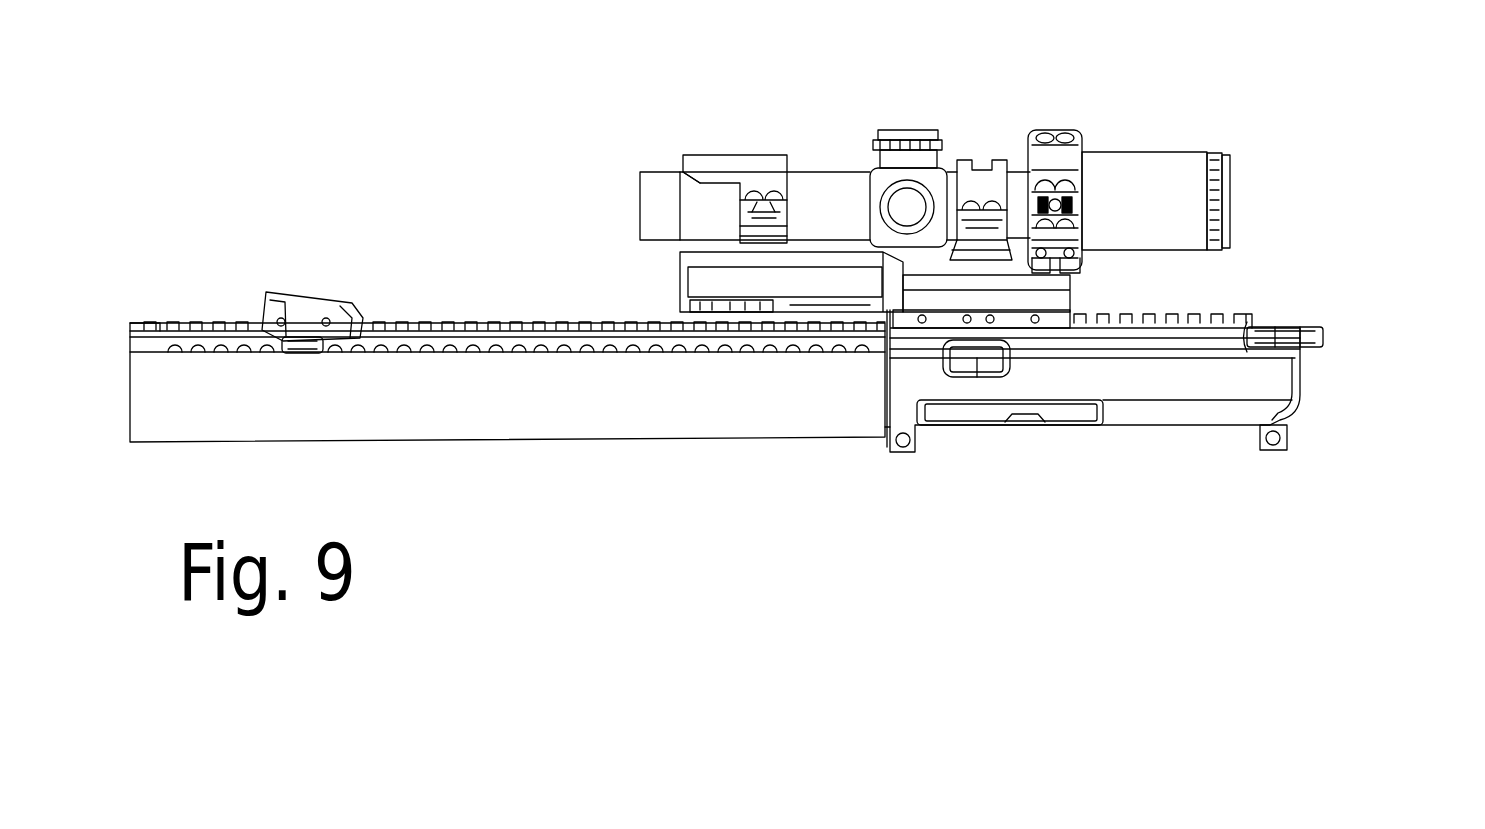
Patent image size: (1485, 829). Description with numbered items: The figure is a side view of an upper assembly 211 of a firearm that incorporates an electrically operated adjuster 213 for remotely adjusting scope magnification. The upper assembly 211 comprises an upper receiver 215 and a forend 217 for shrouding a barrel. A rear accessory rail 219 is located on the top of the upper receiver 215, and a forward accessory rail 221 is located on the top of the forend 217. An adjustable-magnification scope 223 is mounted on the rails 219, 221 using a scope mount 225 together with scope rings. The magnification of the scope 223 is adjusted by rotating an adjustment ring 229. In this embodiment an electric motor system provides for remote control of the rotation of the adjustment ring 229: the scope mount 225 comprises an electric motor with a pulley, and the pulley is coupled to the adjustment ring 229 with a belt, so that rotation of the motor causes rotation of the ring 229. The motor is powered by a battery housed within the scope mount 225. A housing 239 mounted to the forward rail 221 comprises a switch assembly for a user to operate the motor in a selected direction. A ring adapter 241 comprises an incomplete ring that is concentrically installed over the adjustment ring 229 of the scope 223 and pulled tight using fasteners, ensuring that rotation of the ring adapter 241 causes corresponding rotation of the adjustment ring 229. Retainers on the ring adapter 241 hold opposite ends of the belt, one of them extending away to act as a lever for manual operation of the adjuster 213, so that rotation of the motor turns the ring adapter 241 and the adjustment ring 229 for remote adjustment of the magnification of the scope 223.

The upper assembly 211 is at (833, 438).
The electrically operated adjuster 213 is at (1085, 288).
The upper receiver 215 is at (1163, 398).
The forend 217 is at (500, 438).
The rear accessory rail 219 is at (1180, 315).
The forward accessory rail 221 is at (197, 323).
The adjustable-magnification scope 223 is at (833, 173).
The scope mount 225 is at (680, 260).
The adjustment ring 229 is at (1093, 172).
The housing 239 is at (304, 295).
The ring adapter 241 is at (1073, 130).